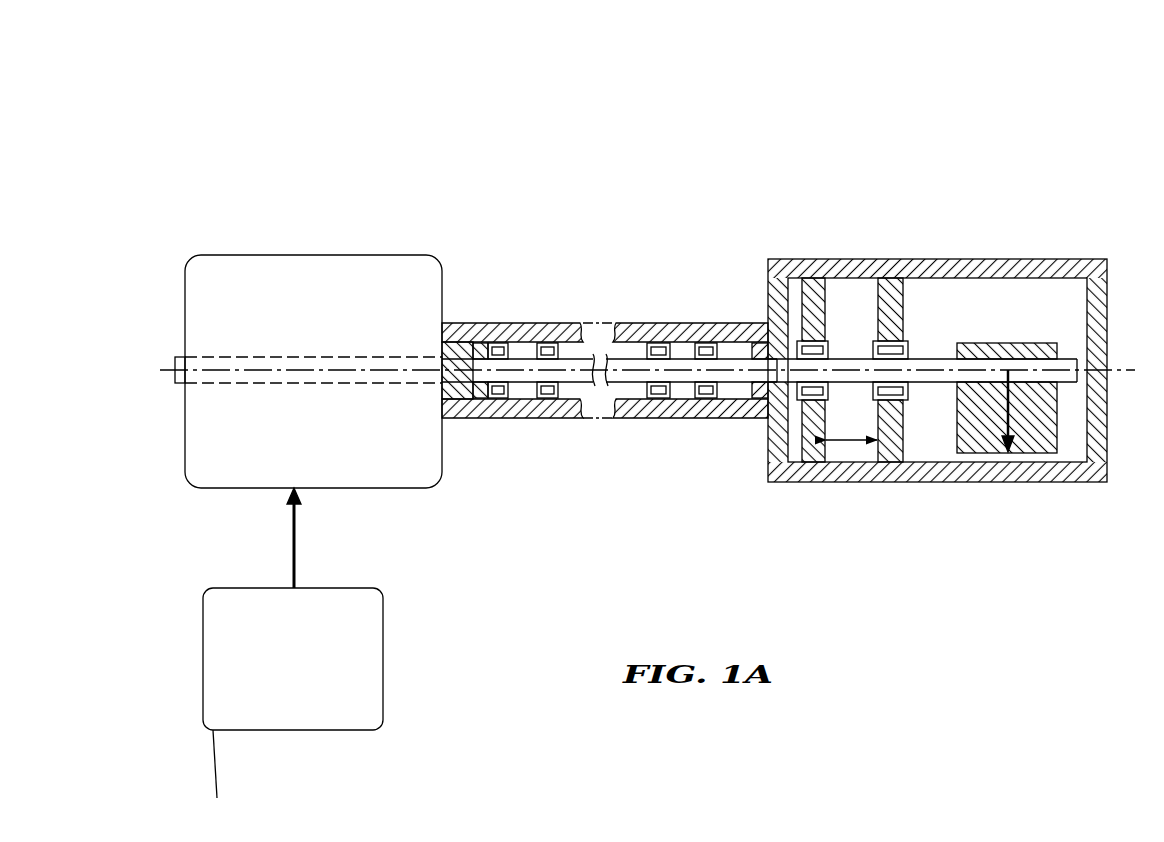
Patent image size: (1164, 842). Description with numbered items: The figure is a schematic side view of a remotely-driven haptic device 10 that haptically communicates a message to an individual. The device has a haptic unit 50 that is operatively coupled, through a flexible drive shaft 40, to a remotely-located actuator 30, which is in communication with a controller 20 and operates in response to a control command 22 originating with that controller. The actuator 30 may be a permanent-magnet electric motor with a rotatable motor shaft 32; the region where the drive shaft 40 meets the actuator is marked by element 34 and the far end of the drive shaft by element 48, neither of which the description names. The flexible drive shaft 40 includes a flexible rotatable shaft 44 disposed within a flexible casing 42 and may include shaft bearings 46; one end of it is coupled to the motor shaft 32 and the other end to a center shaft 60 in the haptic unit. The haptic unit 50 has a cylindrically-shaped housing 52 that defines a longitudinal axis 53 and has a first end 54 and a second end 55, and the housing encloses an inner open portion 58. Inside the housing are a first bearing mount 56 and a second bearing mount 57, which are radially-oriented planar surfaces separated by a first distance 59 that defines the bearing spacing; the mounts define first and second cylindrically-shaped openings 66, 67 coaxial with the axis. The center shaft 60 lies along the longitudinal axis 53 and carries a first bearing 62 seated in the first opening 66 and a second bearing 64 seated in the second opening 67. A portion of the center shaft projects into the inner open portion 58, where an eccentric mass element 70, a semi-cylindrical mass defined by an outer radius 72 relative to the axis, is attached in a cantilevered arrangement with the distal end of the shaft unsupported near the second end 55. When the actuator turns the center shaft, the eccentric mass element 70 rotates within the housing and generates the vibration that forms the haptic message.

The remotely-driven haptic device 10 is at (400, 146).
The controller 20 is at (990, 132).
The control command 22 is at (325, 560).
The remotely-located actuator 30 is at (302, 250).
The motor shaft 32 is at (285, 388).
The bearing support 34 is at (460, 328).
The flexible drive shaft 40 is at (514, 322).
The flexible casing 42 is at (550, 327).
The flexible rotatable shaft 44 is at (640, 363).
The shaft bearings 46 is at (704, 343).
The spacer 48 is at (760, 343).
The haptic unit 50 is at (1063, 255).
The housing 52 is at (988, 258).
The longitudinal axis 53 is at (1068, 375).
The first end 54 is at (778, 255).
The second end 55 is at (1095, 489).
The first bearing mount 56 is at (813, 462).
The second bearing mount 57 is at (888, 462).
The inner open portion 58 is at (950, 464).
The first distance L1 59 is at (863, 434).
The center shaft 60 is at (937, 385).
The first bearing 62 is at (840, 352).
The second bearing 64 is at (915, 352).
The first opening 66 is at (836, 333).
The second opening 67 is at (911, 333).
The eccentric mass element 70 is at (1002, 343).
The outer radius 72 is at (992, 412).